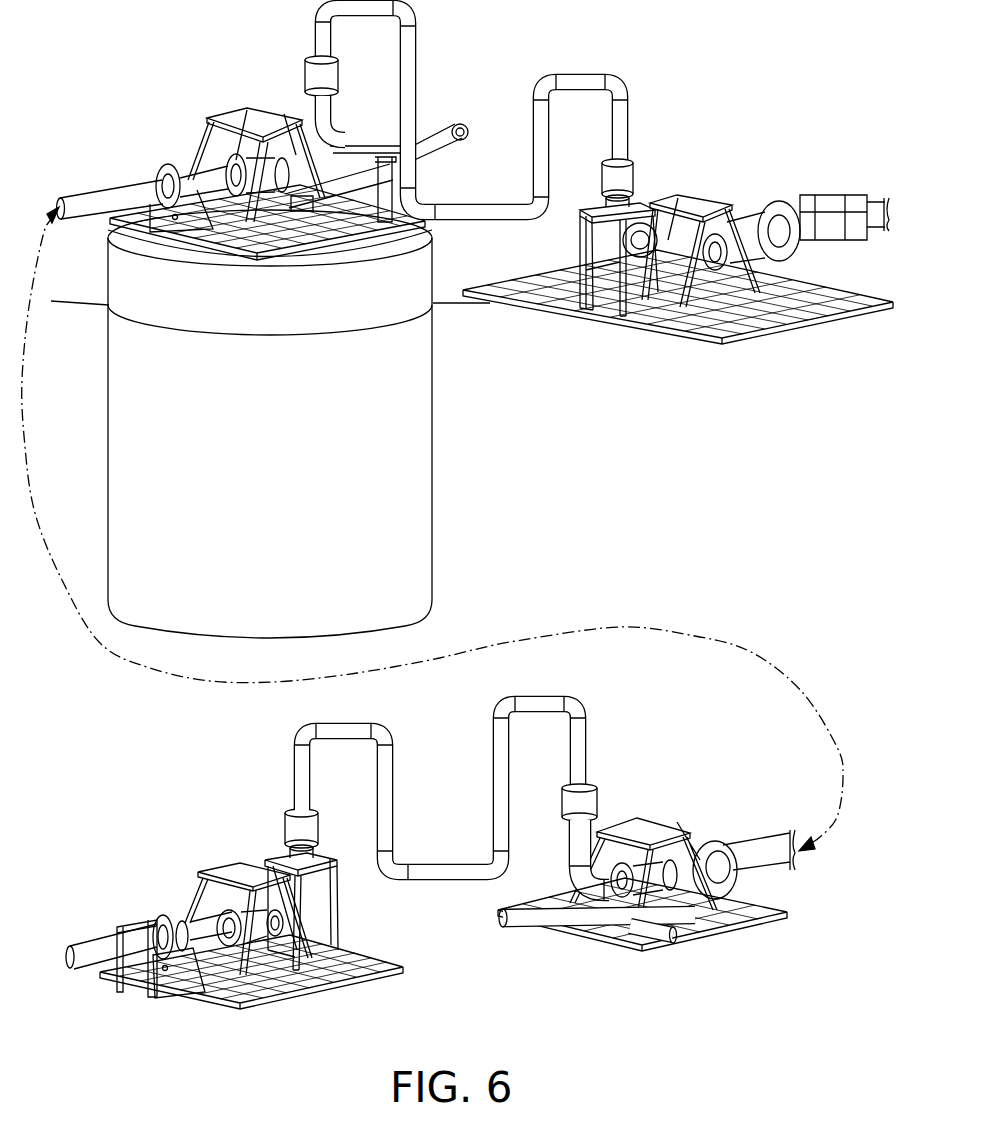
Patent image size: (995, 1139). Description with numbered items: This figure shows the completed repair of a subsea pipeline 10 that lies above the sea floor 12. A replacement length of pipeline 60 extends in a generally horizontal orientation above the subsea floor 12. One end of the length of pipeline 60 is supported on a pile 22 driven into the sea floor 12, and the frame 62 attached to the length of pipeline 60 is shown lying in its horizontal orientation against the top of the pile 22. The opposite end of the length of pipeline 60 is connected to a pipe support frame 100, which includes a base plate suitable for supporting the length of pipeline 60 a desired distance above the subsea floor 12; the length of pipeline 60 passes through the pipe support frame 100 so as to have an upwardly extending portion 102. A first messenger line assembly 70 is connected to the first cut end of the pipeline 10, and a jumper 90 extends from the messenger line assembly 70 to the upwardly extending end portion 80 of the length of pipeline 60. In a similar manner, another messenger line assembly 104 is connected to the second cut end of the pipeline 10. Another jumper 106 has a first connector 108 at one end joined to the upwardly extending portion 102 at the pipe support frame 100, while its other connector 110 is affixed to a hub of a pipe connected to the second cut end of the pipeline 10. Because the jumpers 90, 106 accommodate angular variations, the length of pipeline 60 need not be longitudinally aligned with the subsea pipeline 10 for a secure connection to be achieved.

The subsea pipeline 10 is at (870, 197).
The sea floor 12 is at (461, 306).
The pile 22 is at (430, 415).
The length of pipeline 60 is at (100, 187).
The frame 62 is at (112, 226).
The messenger line assembly 70 is at (673, 168).
The end portion 80 is at (327, 115).
The jumper 90 is at (408, 77).
The pipe support frame 100 is at (783, 913).
The upwardly extending portion 102 is at (597, 883).
The messenger line assembly 104 is at (303, 993).
The jumper 106 is at (433, 870).
The first connector 108 is at (570, 800).
The connector 110 is at (295, 832).